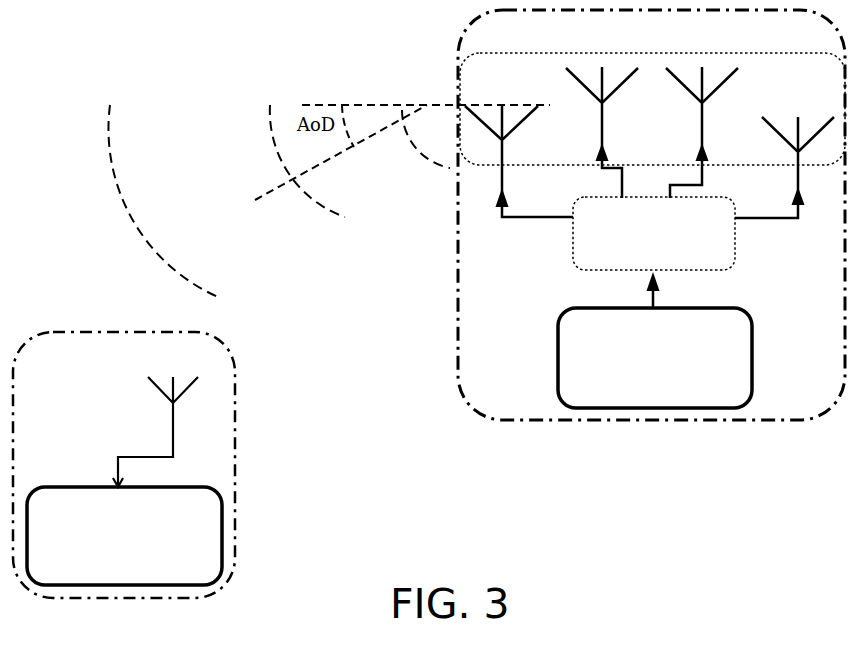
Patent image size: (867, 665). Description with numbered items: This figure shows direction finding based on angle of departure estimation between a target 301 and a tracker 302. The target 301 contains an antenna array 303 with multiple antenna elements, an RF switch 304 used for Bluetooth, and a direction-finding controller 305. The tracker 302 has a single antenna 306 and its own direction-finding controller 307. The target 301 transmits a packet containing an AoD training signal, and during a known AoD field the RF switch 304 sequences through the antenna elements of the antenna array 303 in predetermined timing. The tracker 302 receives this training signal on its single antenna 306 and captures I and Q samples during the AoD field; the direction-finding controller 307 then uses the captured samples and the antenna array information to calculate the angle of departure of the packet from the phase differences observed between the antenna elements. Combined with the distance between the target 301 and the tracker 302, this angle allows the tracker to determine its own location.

The target 301 is at (523, 419).
The tracker 302 is at (73, 330).
The antenna array 303 is at (798, 96).
The RF switch 304 is at (730, 222).
The direction-finding controller 305 is at (739, 308).
The single antenna 306 is at (176, 377).
The direction-finding controller 307 is at (194, 484).